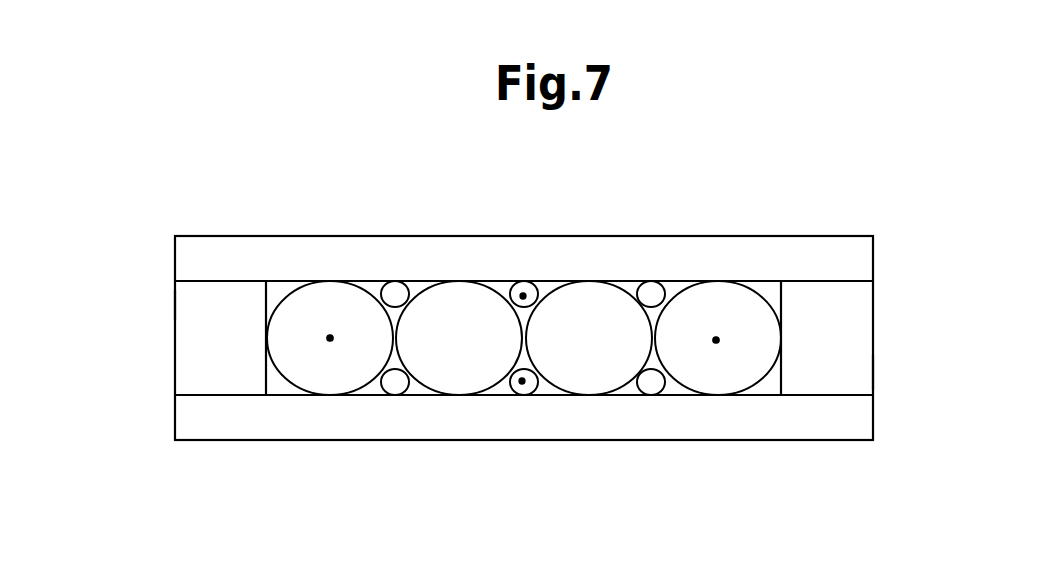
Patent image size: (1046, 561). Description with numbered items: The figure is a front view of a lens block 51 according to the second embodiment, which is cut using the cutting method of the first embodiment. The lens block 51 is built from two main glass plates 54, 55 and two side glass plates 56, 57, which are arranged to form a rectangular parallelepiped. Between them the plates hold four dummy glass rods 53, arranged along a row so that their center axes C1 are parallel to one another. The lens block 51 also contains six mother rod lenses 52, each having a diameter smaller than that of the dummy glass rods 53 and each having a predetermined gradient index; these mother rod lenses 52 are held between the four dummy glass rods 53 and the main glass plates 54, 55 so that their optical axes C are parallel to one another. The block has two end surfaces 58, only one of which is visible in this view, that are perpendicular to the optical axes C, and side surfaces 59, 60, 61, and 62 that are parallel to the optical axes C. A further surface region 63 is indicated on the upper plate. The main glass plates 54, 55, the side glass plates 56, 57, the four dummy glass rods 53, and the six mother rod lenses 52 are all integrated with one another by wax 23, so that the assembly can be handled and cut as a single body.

The lens block 51 is at (523, 237).
The mother rod lens 52 is at (413, 282).
The dummy glass rod 53 is at (293, 395).
The main glass plate 54 is at (462, 242).
The main glass plate 55 is at (610, 433).
The side glass plate 56 is at (875, 324).
The side glass plate 57 is at (181, 346).
The end surface 58 is at (829, 253).
The side surface 59 is at (233, 237).
The side surface 60 is at (875, 368).
The side surface 61 is at (693, 443).
The side surface 62 is at (173, 305).
The upper plate layer 63 is at (774, 241).
The wax 23 is at (413, 396).
The optical axis C is at (523, 296).
The center axis C1 is at (330, 338).